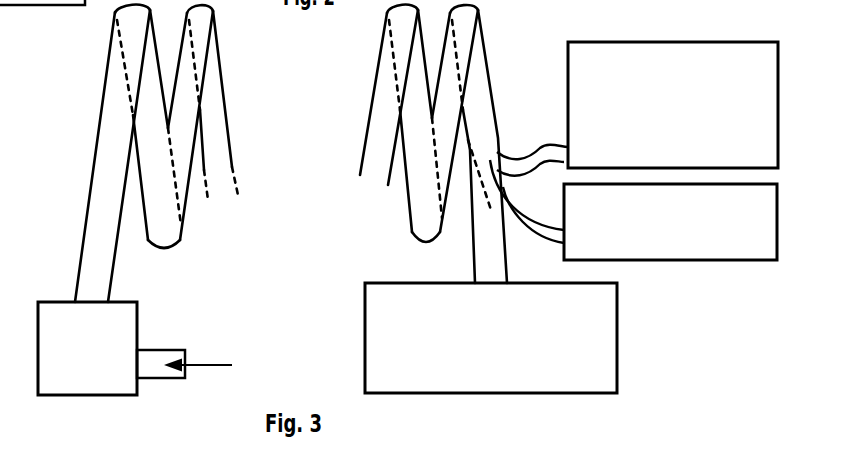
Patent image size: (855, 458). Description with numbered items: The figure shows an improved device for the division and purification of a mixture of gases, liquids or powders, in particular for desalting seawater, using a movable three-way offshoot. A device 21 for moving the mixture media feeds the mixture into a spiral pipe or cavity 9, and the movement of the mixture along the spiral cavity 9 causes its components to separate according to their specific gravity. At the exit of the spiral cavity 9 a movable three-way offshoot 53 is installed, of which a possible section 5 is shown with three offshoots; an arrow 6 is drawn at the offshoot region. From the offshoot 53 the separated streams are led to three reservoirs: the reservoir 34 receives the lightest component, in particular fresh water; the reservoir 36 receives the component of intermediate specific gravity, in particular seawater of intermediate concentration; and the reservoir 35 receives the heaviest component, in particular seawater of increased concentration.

The spiral cavity 9 is at (179, 153).
The device for moving the mixture media 21 is at (135, 348).
The section 5 is at (482, 102).
The 3-way offshoot 53 is at (532, 141).
The flow direction 6 is at (462, 135).
The reservoir for the lightest component 34 is at (673, 105).
The reservoir for the heaviest component 35 is at (670, 222).
The reservoir for the intermediate component 36 is at (491, 338).